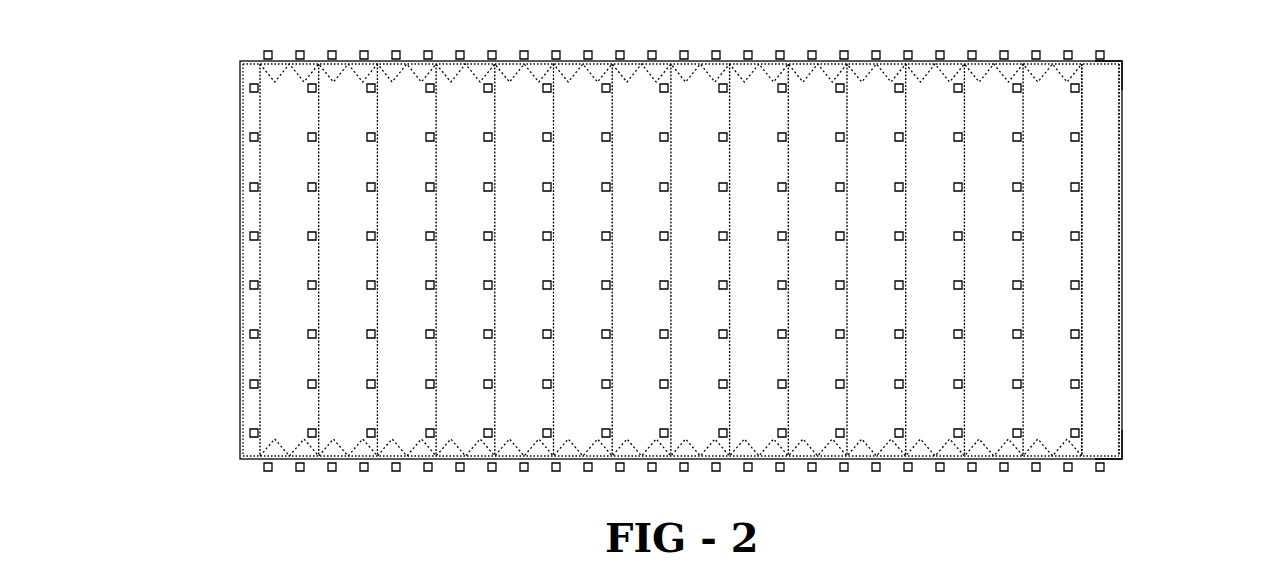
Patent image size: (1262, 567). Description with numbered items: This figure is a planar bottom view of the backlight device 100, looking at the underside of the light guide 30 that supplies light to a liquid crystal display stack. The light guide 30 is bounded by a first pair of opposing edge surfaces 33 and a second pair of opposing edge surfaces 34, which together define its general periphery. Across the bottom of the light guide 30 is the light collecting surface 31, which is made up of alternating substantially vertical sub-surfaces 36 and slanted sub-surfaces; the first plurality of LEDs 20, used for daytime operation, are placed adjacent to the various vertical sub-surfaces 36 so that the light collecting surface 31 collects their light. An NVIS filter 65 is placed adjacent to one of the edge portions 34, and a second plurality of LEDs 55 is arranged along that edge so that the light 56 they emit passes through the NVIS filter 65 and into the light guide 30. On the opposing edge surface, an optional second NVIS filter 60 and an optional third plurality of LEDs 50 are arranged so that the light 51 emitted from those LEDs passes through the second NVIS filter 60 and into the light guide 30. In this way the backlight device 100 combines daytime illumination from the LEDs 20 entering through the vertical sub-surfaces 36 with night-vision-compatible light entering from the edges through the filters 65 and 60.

The backlight device 100 is at (219, 186).
The first plurality of LEDs 20 is at (1083, 286).
The light guide 30 is at (1098, 385).
The light collecting surface 31 is at (398, 122).
The first pair of opposing edge surfaces 33 is at (1122, 130).
The second pair of opposing edge surfaces 34 is at (472, 62).
The vertical sub-surfaces 36 is at (790, 123).
The third plurality of LEDs 50 is at (710, 55).
The light emitted from the third plurality of LEDs 51 is at (703, 77).
The second plurality of LEDs 55 is at (722, 468).
The light emitted from the second plurality of LEDs 56 is at (705, 447).
The second NVIS filter 60 is at (1122, 62).
The NVIS filter 65 is at (1120, 458).